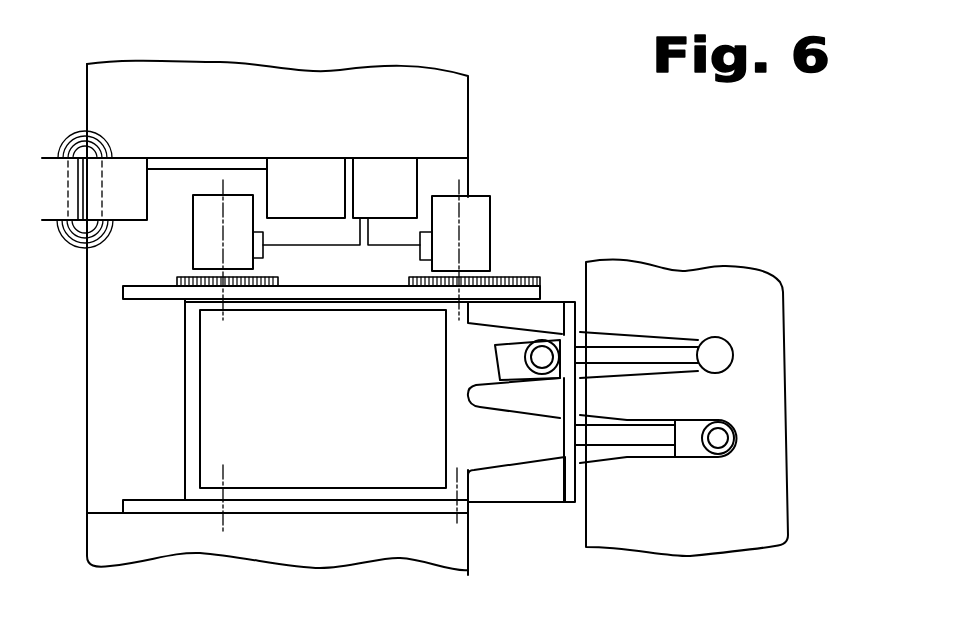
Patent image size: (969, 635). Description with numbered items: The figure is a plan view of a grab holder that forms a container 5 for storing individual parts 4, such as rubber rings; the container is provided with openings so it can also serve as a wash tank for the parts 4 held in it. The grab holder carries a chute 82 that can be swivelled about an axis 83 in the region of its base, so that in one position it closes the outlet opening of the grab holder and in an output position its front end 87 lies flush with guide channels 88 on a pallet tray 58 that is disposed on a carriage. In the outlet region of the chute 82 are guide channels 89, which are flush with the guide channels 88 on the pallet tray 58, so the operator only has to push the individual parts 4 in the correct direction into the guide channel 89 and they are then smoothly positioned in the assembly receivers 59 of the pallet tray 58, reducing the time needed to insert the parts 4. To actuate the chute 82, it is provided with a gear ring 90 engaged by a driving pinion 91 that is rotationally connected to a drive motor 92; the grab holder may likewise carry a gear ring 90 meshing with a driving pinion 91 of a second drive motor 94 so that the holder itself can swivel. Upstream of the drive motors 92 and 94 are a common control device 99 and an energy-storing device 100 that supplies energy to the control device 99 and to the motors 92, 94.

The individual parts 4 is at (518, 358).
The container 5 is at (165, 398).
The pallet tray 58 is at (766, 385).
The assembly receivers 59 is at (723, 337).
The chute 82 is at (522, 513).
The axis 83 is at (457, 475).
The front end 87 is at (581, 477).
The guide channels 88 is at (645, 350).
The guide channels 89 is at (580, 344).
The gear ring 90 is at (515, 278).
The driving pinion 91 is at (180, 273).
The drive motor 92 is at (477, 213).
The drive motor 94 is at (208, 220).
The control device 99 is at (383, 182).
The energy-storing device 100 is at (303, 187).